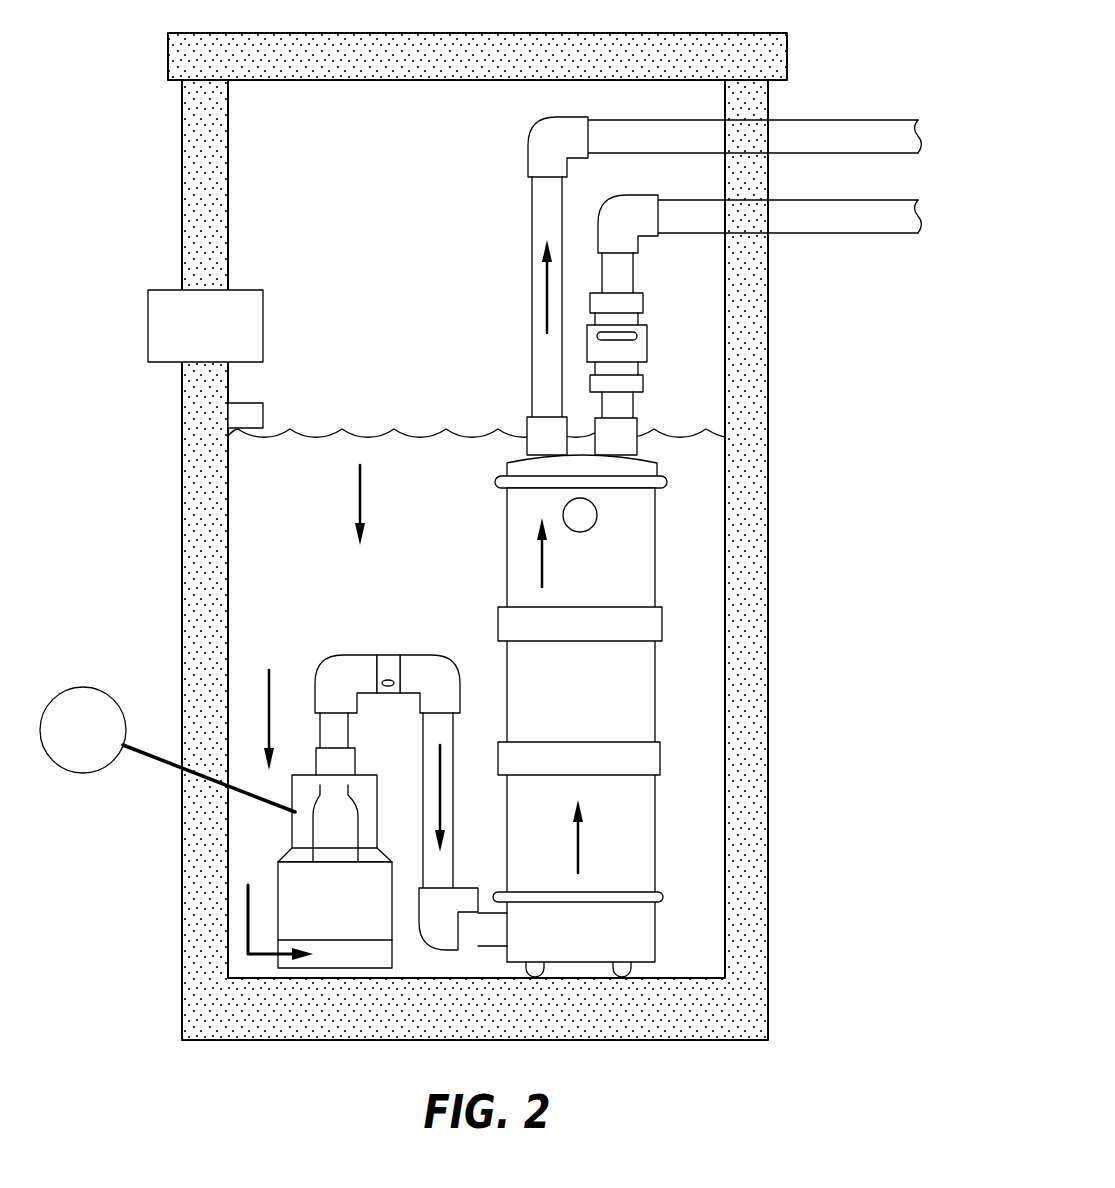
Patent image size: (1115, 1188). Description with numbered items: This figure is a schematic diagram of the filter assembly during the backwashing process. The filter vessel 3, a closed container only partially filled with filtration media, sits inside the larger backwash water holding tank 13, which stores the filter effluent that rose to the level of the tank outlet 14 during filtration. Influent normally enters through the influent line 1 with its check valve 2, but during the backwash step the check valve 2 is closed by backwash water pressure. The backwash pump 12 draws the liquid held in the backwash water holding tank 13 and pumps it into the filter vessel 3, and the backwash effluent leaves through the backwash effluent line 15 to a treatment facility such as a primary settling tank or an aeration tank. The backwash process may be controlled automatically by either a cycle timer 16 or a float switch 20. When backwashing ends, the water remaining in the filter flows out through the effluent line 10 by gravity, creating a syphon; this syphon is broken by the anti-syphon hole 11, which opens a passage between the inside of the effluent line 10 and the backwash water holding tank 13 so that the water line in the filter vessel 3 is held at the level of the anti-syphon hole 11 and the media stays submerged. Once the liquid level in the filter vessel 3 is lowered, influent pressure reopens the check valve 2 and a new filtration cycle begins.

The influent line 1 is at (848, 233).
The check valve 2 is at (647, 340).
The filter vessel 3 is at (655, 545).
The effluent line 10 is at (455, 733).
The anti-syphon hole 11 is at (389, 678).
The backwash pump 12 is at (293, 832).
The backwash water holding tank 13 is at (228, 546).
The tank outlet 14 is at (255, 290).
The backwash effluent line 15 is at (853, 120).
The cycle timer 16 is at (85, 687).
The float switch 20 is at (247, 413).